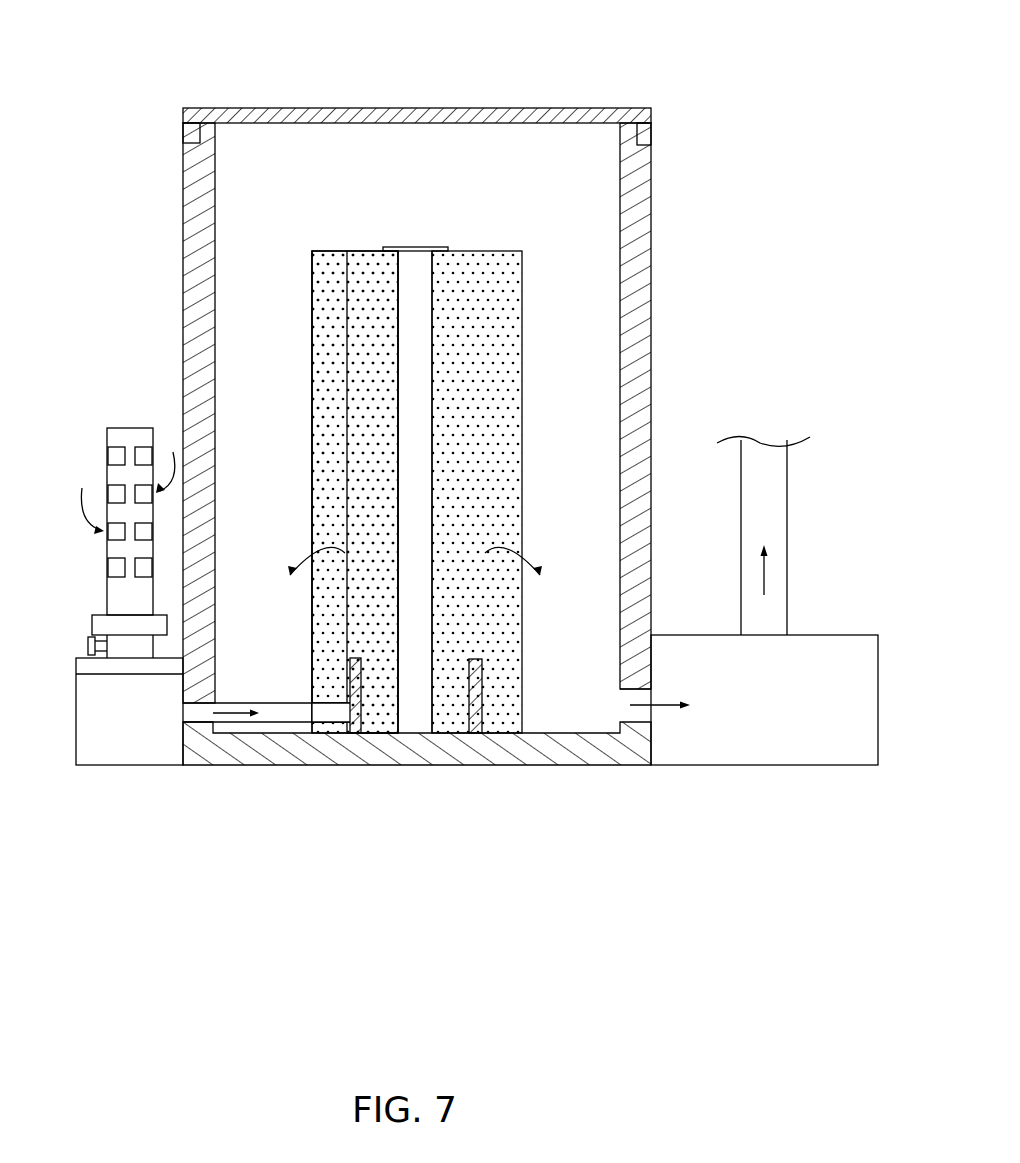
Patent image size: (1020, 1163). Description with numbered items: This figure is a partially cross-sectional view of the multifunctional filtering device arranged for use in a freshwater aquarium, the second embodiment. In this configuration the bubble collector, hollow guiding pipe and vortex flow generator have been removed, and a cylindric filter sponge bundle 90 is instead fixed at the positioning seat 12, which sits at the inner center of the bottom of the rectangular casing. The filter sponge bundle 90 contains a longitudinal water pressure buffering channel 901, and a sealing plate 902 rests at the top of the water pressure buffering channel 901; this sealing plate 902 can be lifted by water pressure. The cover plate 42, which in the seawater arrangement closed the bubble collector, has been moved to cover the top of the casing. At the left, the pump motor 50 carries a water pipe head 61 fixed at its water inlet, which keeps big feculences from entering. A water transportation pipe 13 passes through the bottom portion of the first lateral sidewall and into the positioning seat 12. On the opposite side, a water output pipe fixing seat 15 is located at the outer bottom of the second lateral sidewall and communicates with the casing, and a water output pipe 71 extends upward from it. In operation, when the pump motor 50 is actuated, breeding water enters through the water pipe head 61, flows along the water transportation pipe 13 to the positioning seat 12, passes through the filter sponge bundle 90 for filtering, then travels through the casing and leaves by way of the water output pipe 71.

The cover plate 42 is at (612, 112).
The sealing plate 902 is at (425, 247).
The water pressure buffering channel 901 is at (408, 312).
The filter sponge bundle 90 is at (505, 317).
The water pipe head 61 is at (130, 432).
The pump motor 50 is at (82, 718).
The water transportation pipe 13 is at (293, 715).
The positioning seat 12 is at (475, 712).
The water output pipe fixing seat 15 is at (815, 755).
The water output pipe 71 is at (780, 478).